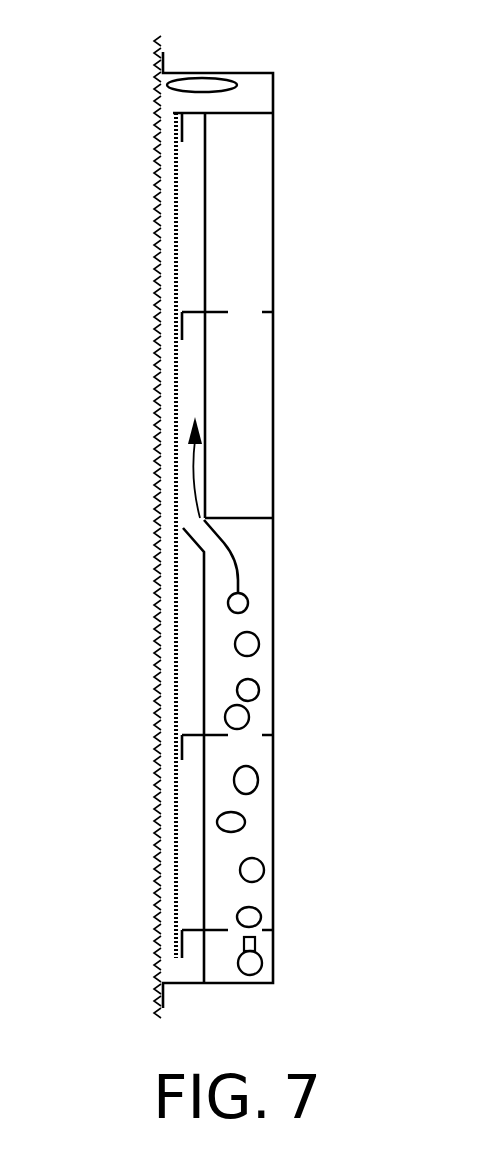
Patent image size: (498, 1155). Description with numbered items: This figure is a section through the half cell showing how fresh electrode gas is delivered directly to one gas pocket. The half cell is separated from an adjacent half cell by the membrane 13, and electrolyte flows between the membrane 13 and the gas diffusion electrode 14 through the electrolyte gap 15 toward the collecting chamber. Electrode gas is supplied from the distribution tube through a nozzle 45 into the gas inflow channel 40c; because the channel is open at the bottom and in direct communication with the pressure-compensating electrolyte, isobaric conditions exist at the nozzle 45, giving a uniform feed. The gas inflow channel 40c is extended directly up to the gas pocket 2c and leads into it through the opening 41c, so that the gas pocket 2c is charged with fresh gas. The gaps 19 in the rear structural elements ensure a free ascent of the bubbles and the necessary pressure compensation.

The gas pocket 2c is at (195, 383).
The membrane 13 is at (158, 885).
The gas diffusion electrode 14 is at (205, 771).
The electrolyte gap 15 is at (158, 443).
The gaps 19 is at (246, 733).
The gas inflow channel 40c is at (237, 673).
The opening 41c is at (196, 519).
The nozzle 45 is at (484, 1039).